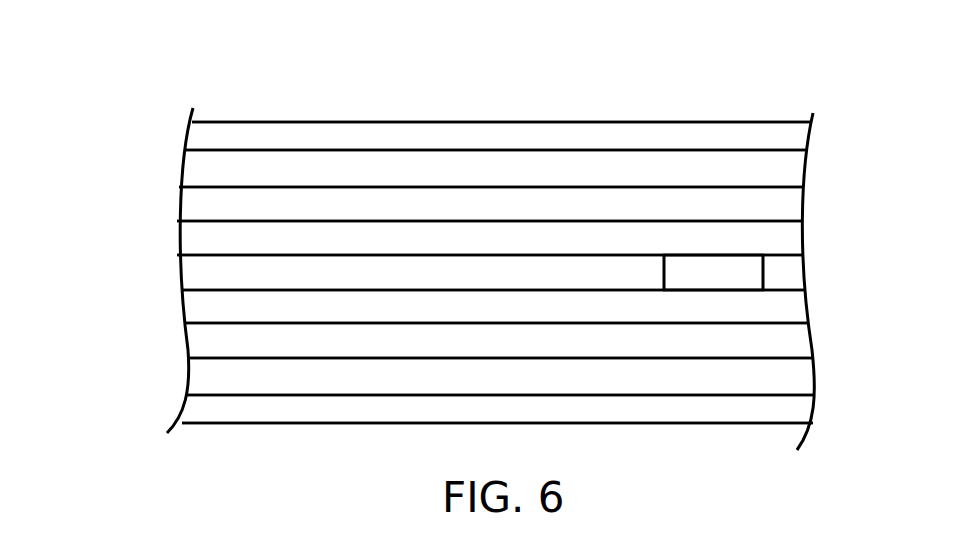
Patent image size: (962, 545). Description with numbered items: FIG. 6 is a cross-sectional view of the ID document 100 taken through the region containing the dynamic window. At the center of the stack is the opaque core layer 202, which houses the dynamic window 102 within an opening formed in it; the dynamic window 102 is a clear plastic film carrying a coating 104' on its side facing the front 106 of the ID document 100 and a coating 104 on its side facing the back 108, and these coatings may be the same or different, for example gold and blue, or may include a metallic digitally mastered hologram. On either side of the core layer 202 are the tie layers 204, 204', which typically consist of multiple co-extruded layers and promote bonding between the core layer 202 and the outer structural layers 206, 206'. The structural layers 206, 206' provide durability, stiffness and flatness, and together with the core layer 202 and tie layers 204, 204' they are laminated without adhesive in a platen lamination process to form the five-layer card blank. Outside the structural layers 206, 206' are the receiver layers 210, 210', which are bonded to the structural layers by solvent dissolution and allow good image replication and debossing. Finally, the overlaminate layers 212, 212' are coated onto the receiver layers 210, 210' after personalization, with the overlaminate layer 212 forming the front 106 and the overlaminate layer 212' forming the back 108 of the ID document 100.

The ID document 100 is at (378, 82).
The dynamic window 102 is at (745, 263).
The coating 104 is at (784, 316).
The coating 104' is at (787, 208).
The front 106 is at (762, 122).
The back 108 is at (265, 423).
The core layer 202 is at (190, 273).
The tie layer 204 is at (444, 253).
The tie layer 204' is at (532, 273).
The structural layer 206 is at (436, 201).
The structural layer 206' is at (542, 331).
The receiver layer 210 is at (440, 153).
The receiver layer 210' is at (534, 410).
The overlaminate layer 212 is at (469, 96).
The overlaminate layer 212' is at (498, 449).